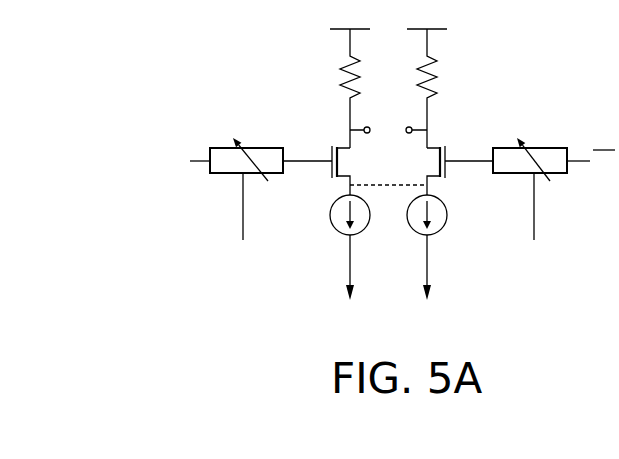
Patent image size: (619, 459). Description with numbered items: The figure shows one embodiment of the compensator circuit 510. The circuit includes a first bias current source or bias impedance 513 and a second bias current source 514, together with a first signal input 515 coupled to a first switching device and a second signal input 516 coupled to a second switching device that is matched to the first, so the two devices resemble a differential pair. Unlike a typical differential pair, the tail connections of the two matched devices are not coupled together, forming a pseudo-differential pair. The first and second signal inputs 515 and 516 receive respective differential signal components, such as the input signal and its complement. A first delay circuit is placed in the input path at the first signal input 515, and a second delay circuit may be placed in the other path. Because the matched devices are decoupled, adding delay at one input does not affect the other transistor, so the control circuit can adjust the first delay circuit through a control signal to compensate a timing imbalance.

The compensator circuit 510 is at (515, 82).
The first bias current source 513 is at (330, 215).
The second bias current source 514 is at (447, 215).
The first signal input 515 is at (324, 167).
The second signal input 516 is at (452, 167).